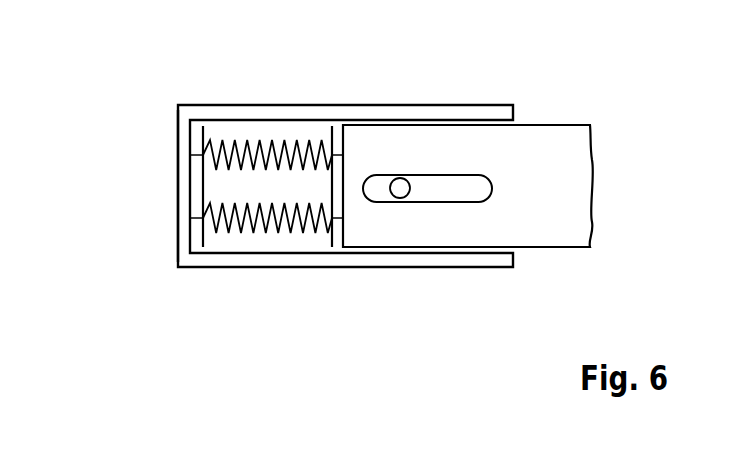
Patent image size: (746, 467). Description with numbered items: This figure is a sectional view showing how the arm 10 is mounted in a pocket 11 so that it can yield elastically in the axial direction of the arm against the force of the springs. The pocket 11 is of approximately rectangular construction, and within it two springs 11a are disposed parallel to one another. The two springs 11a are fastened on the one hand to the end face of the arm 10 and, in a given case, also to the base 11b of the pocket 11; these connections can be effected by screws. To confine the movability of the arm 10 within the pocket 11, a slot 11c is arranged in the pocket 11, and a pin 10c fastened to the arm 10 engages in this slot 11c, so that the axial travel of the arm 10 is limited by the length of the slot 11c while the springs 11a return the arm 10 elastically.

The arm 10 is at (563, 142).
The pin 10c is at (401, 192).
The pocket 11 is at (365, 113).
The spring 11a is at (265, 150).
The base of the pocket 11b is at (183, 185).
The slot 11c is at (460, 183).